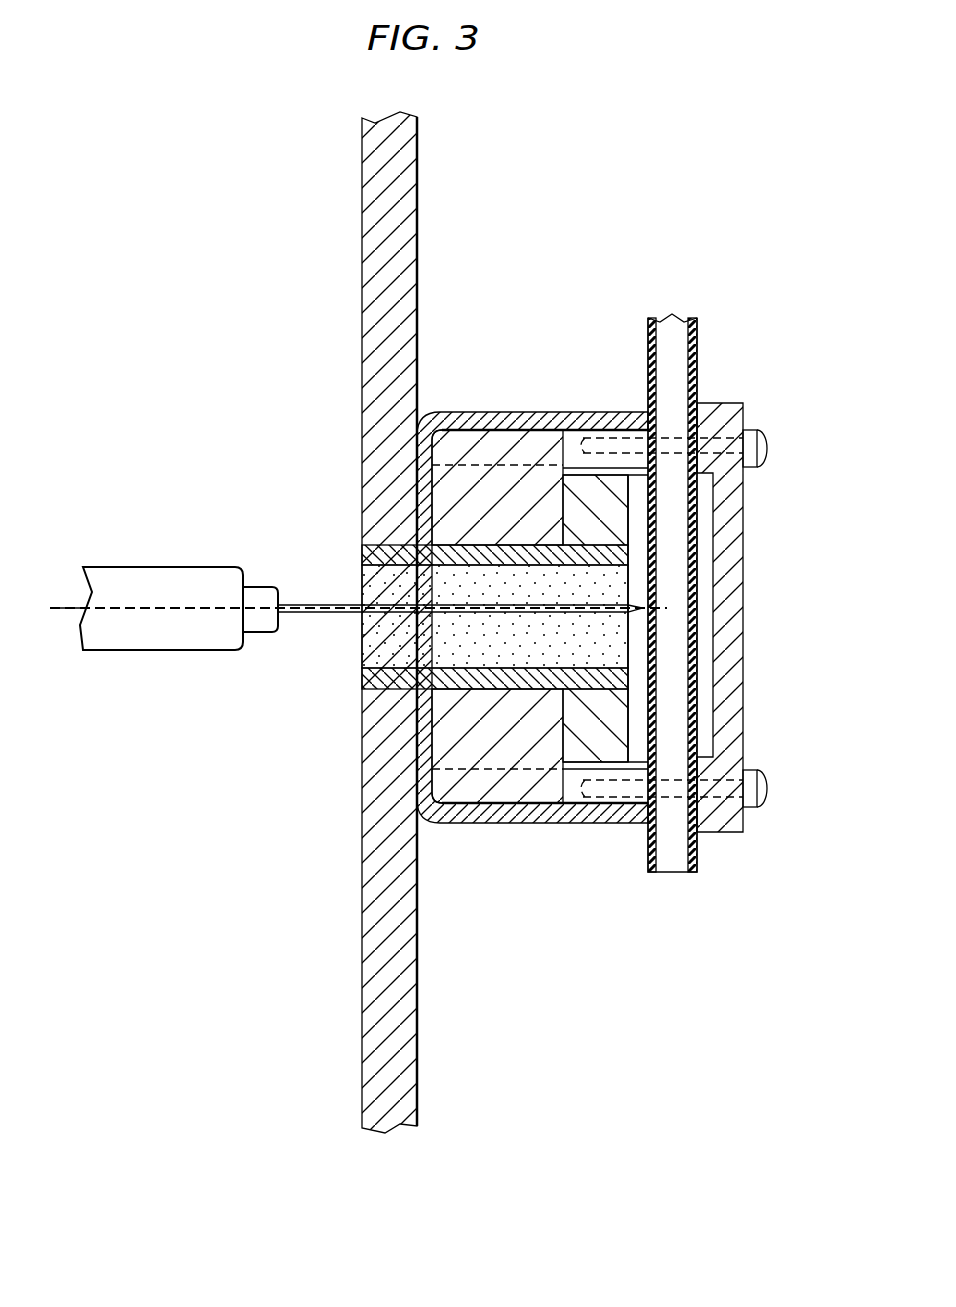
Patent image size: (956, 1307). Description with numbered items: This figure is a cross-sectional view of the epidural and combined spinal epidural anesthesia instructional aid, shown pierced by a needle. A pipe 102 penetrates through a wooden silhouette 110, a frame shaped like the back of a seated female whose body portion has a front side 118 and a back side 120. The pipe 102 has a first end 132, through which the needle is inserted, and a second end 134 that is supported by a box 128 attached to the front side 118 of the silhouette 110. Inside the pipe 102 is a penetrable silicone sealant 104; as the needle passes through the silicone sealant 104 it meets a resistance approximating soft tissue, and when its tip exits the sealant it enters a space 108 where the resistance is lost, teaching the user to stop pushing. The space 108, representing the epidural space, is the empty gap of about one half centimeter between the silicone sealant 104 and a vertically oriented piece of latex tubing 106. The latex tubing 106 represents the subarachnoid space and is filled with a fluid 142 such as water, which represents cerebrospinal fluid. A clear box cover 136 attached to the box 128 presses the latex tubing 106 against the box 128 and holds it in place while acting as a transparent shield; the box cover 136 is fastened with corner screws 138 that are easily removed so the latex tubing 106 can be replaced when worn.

The wooden silhouette 110 is at (372, 106).
The front side 118 is at (417, 220).
The back side 120 is at (362, 292).
The box 128 is at (523, 412).
The pipe 102 is at (495, 690).
The space 108 is at (636, 752).
The first end 132 is at (362, 553).
The silicone sealant 104 is at (362, 635).
The second end 134 is at (625, 555).
The latex tubing 106 is at (697, 352).
The fluid 142 is at (668, 318).
The box cover 136 is at (745, 588).
The corner screws 138 is at (767, 447).